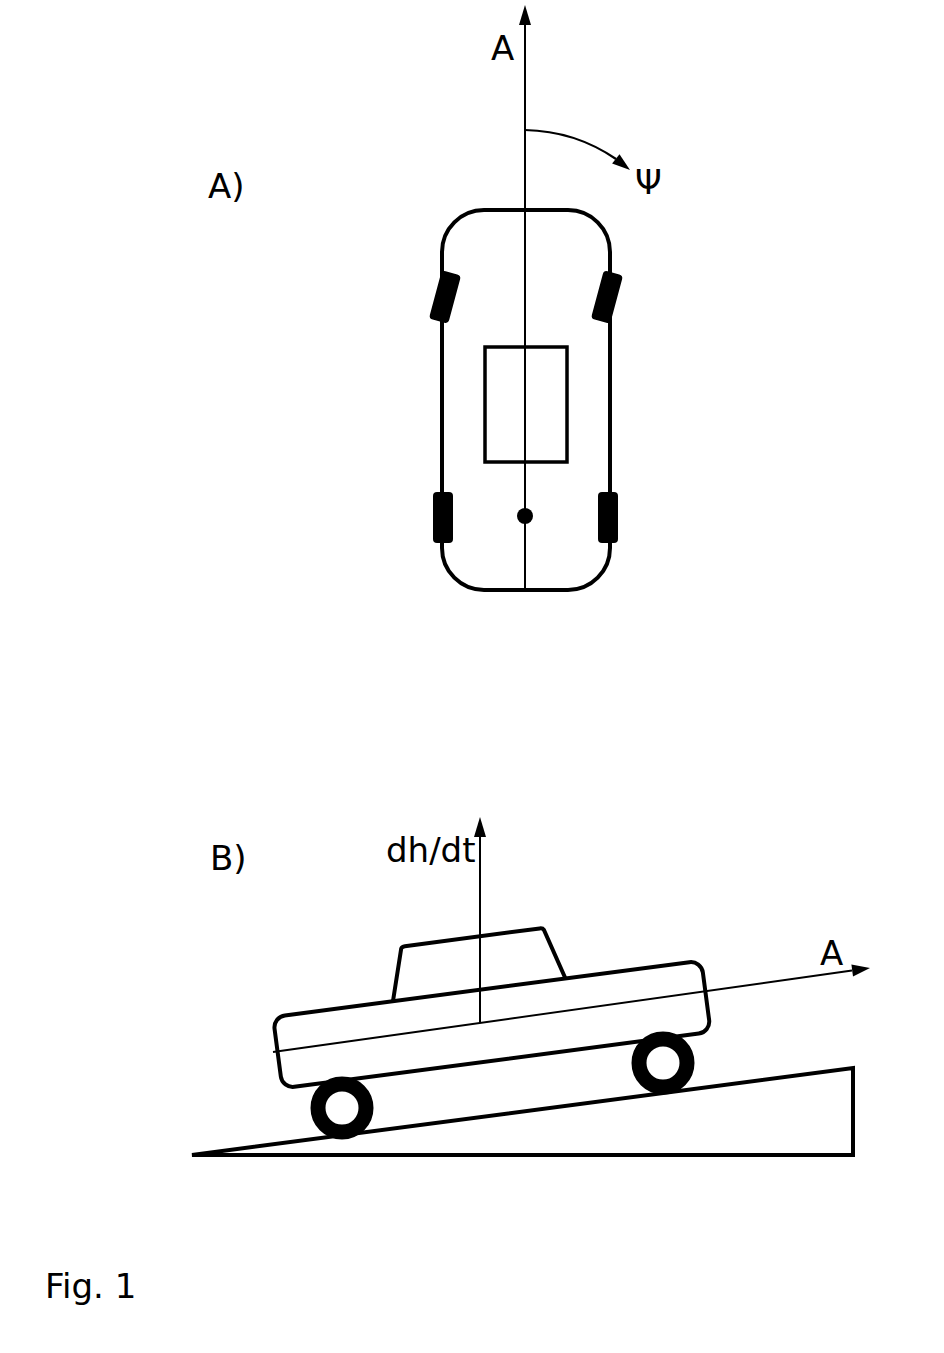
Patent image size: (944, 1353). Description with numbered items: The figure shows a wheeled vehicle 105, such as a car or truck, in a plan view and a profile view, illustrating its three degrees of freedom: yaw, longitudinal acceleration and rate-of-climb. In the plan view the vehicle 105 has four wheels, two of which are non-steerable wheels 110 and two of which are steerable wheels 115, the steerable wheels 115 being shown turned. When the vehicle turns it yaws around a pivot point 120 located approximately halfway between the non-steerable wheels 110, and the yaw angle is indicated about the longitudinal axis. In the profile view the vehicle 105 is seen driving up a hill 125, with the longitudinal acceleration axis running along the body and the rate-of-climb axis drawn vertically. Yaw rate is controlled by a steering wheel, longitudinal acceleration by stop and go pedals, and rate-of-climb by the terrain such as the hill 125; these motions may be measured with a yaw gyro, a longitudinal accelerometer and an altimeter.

In FIG. 1A, the wheeled vehicle 105 is at (607, 577).
In FIG. 1B, the wheeled vehicle 105 is at (268, 1015).
In FIG. 1A, the non-steerable wheel 110 is at (430, 518).
In FIG. 1B, the non-steerable wheel 110 is at (308, 1122).
In FIG. 1A, the steerable wheel 115 is at (428, 305).
In FIG. 1B, the steerable wheel 115 is at (703, 1063).
In FIG. 1A, the pivot point 120 is at (512, 525).
In FIG. 1B, the hill 125 is at (830, 1137).